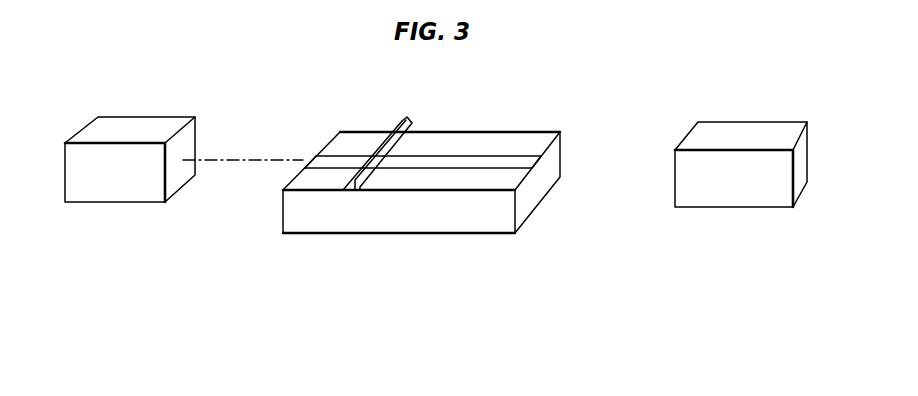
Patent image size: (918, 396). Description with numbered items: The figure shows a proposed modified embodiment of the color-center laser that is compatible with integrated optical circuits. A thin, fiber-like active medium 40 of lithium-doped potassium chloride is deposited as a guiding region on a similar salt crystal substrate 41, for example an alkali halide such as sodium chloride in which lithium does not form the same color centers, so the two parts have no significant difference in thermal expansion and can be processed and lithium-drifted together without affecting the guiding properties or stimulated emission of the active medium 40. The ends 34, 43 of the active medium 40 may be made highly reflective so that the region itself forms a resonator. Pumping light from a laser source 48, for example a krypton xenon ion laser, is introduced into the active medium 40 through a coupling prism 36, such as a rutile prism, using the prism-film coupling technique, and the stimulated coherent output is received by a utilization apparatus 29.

The utilization apparatus 29 is at (733, 197).
The end of active region 34 is at (307, 160).
The coupling prism 36 is at (398, 119).
The active medium 40 is at (500, 161).
The substrate crystal 41 is at (548, 172).
The end of active region 43 is at (537, 160).
The laser source 48 is at (112, 192).